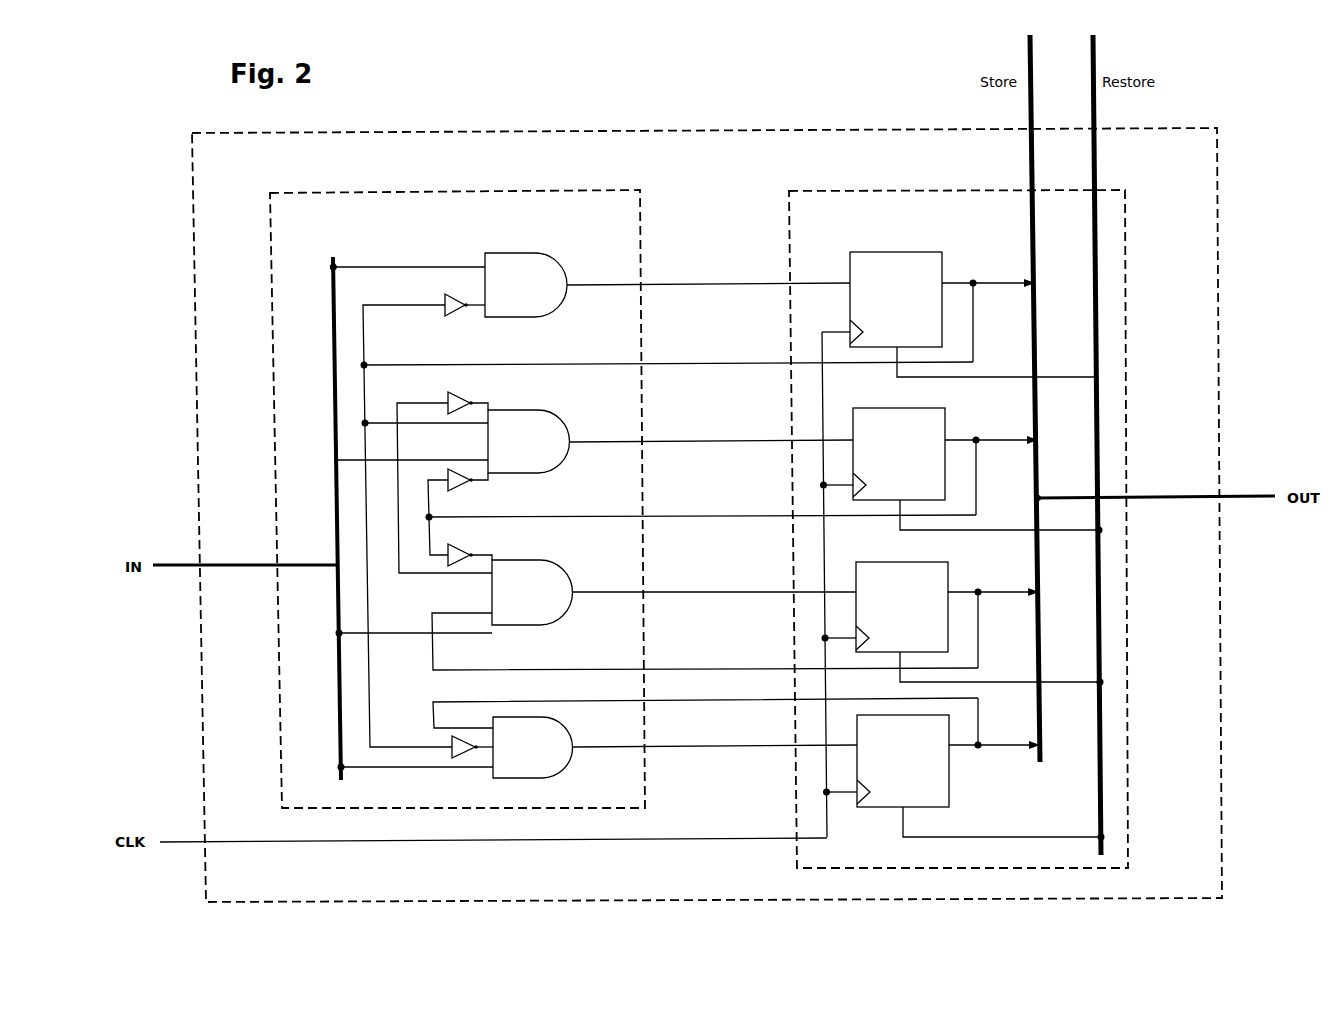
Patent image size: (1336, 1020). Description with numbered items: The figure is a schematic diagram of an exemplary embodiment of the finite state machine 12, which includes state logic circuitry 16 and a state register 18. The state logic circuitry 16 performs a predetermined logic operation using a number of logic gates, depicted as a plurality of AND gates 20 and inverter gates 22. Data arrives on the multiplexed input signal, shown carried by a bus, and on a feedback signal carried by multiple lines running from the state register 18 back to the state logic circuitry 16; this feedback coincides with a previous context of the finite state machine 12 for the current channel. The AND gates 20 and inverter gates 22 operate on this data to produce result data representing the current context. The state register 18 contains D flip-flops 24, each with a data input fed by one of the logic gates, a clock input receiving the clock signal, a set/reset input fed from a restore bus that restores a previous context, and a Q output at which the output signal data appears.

The finite state machine 12 is at (519, 104).
The state logic circuitry 16 is at (598, 191).
The state register 18 is at (980, 191).
The AND gates 20 is at (554, 261).
The inverter gates 22 is at (455, 316).
The flip-flops 24 is at (943, 261).